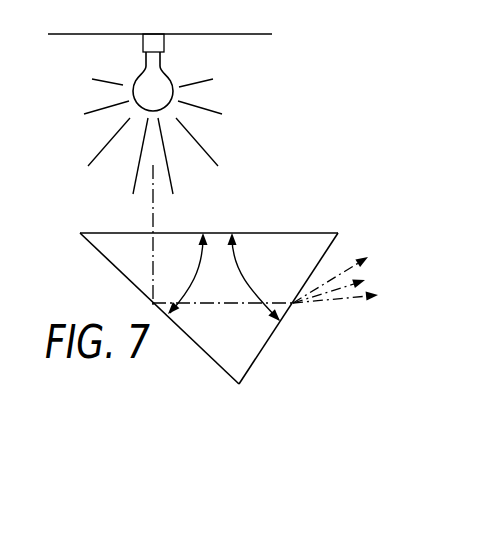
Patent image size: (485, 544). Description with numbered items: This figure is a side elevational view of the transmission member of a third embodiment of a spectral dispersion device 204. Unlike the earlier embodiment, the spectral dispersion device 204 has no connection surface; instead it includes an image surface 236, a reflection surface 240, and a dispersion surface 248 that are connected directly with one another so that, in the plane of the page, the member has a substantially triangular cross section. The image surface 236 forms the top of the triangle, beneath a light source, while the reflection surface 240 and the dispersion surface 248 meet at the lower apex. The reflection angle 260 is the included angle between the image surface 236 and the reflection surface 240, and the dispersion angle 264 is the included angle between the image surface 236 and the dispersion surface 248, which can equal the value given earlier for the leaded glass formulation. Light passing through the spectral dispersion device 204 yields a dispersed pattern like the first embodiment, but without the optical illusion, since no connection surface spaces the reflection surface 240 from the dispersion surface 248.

The spectral dispersion device 204 is at (274, 211).
The image surface 236 is at (118, 232).
The reflection surface 240 is at (210, 357).
The dispersion surface 248 is at (268, 340).
The reflection angle 260 is at (193, 279).
The dispersion angle 264 is at (236, 283).